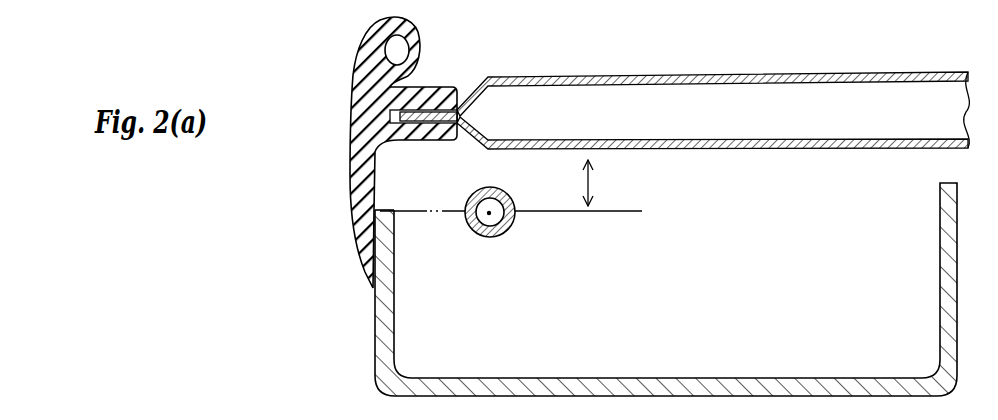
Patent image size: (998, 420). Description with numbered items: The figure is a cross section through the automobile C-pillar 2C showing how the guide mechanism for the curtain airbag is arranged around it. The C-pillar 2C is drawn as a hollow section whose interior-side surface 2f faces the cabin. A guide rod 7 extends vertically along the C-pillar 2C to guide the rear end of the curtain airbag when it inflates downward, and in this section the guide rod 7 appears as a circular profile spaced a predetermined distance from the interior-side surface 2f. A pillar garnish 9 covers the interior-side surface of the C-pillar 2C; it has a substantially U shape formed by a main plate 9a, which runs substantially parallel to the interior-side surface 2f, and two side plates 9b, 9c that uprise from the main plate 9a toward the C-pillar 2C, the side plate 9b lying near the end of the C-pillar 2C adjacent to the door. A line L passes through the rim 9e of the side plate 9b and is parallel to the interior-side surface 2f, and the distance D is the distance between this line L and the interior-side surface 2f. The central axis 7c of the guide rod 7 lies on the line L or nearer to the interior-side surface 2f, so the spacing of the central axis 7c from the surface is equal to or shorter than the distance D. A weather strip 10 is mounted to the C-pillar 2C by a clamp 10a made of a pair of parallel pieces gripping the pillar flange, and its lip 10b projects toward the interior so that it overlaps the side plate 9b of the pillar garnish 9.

The weather strip 10 is at (343, 116).
The clamp 10a is at (433, 88).
The lip 10b is at (351, 231).
The C-pillar 2C is at (730, 70).
The interior-side surface 2f is at (705, 150).
The distance D is at (600, 183).
The line L is at (625, 212).
The pillar garnish 9 is at (647, 402).
The main plate 9a is at (653, 377).
The side plate 9b is at (372, 313).
The side plate 9c is at (940, 262).
The rim 9e is at (385, 210).
The guide rod 7 is at (513, 229).
The central axis 7c is at (488, 216).